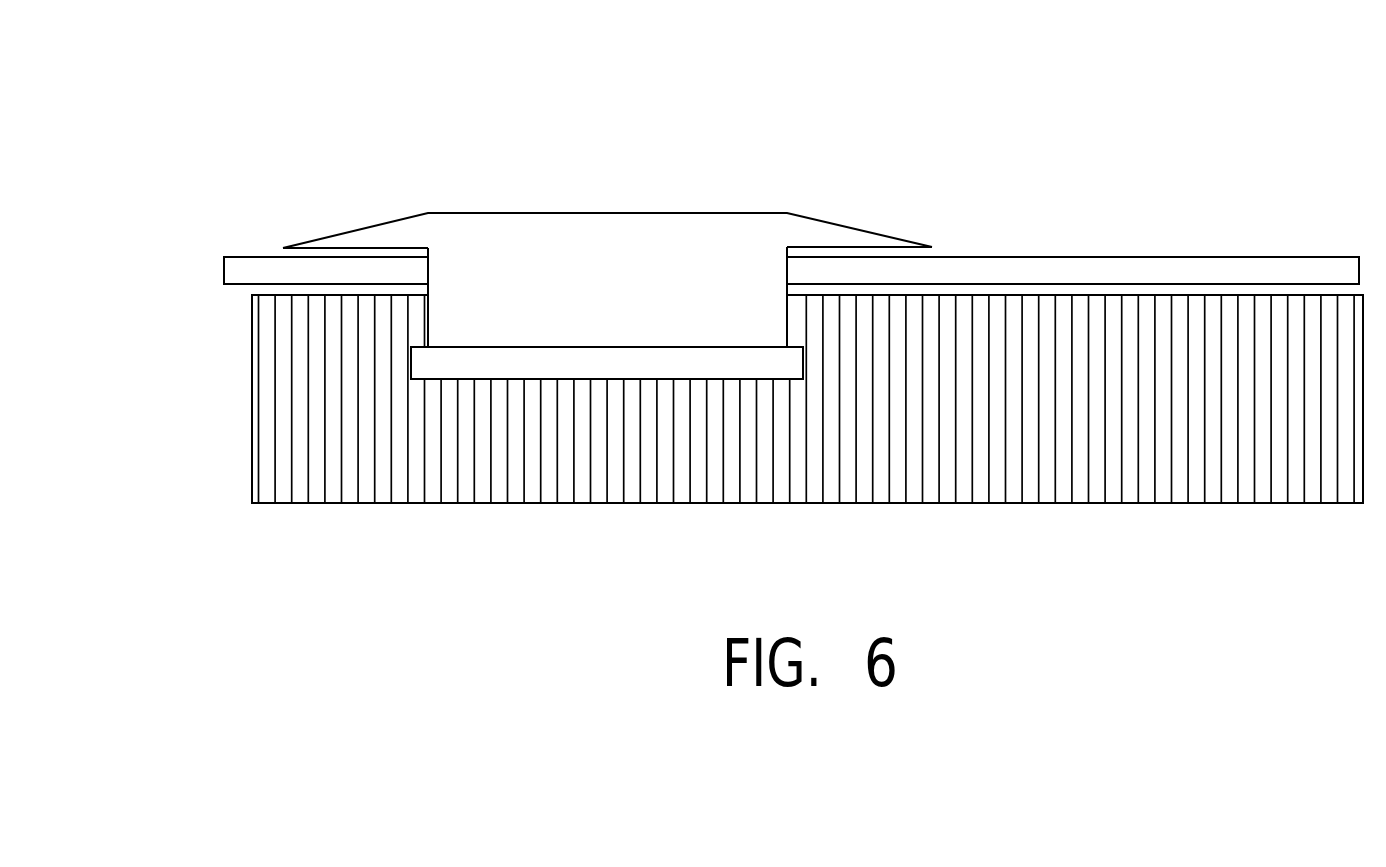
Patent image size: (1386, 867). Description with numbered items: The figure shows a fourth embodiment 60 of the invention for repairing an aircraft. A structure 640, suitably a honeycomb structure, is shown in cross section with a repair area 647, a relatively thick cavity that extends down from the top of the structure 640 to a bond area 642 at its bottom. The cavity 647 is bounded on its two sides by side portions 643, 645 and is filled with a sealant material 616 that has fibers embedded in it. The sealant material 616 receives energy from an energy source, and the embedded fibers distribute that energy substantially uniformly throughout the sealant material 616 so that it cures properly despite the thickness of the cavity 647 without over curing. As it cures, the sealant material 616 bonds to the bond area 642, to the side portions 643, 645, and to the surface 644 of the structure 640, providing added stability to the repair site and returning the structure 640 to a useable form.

The fourth embodiment 60 is at (1228, 85).
The sealant material 616 is at (700, 263).
The structure 640 is at (807, 399).
The bond area 642 is at (632, 380).
The side portion 643 is at (427, 322).
The surface 644 is at (1010, 267).
The side portion 645 is at (788, 327).
The repair area 647 is at (522, 260).